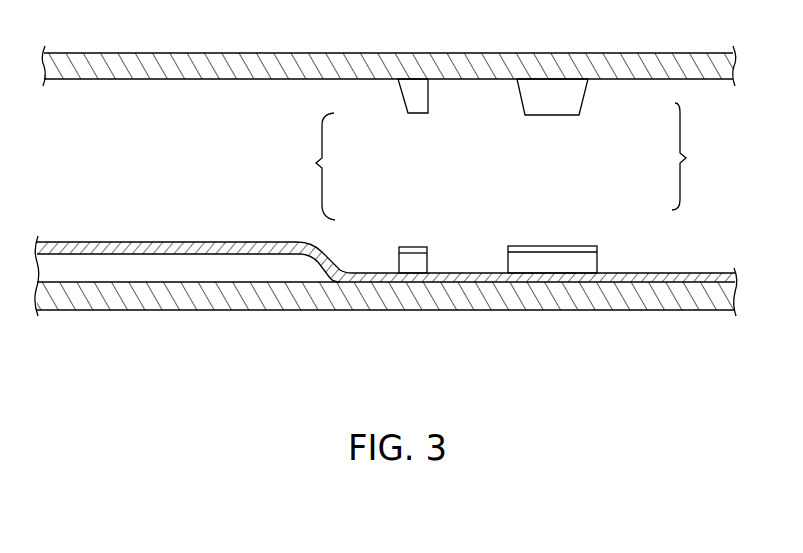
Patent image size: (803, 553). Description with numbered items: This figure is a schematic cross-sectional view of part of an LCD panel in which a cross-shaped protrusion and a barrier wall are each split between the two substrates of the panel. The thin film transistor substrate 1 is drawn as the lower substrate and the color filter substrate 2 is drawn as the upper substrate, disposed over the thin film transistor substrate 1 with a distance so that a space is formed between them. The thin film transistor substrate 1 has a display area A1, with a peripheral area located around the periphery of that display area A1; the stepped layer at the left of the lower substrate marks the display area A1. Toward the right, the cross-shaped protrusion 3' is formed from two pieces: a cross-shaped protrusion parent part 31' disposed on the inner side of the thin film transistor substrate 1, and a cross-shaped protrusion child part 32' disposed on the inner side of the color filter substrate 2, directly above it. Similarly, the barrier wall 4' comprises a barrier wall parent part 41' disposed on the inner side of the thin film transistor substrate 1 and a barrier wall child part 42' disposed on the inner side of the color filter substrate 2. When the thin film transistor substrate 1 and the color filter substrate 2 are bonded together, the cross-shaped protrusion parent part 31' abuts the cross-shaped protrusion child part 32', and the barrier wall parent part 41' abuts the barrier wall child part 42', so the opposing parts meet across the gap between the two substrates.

The thin film transistor substrate 1 is at (603, 311).
The color filter substrate 2 is at (620, 57).
The cross-shaped protrusion 3' is at (692, 156).
The barrier wall 4' is at (315, 166).
The cross-shaped protrusion parent part 31' is at (587, 229).
The cross-shaped protrusion child part 32' is at (590, 104).
The barrier wall parent part 41' is at (382, 236).
The barrier wall child part 42' is at (382, 102).
The display area A1 is at (183, 290).